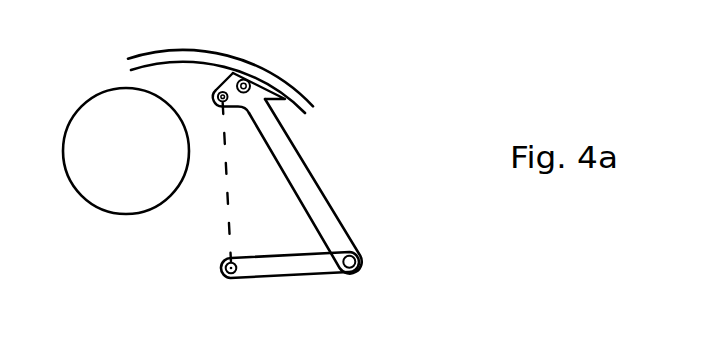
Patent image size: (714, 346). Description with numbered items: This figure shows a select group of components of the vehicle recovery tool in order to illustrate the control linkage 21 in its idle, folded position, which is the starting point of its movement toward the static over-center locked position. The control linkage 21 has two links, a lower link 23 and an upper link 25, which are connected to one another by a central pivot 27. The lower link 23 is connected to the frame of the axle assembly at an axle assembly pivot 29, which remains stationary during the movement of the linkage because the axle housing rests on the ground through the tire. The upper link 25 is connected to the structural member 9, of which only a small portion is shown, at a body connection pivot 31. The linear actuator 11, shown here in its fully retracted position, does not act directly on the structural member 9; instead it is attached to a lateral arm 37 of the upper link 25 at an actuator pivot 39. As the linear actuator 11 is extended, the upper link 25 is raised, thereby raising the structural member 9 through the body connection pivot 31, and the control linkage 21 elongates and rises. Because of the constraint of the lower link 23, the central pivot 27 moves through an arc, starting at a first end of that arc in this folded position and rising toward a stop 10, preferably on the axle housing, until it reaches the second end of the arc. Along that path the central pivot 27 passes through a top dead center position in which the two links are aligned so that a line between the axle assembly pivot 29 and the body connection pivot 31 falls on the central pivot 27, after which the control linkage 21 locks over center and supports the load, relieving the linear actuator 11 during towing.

The structural member 9 is at (283, 80).
The stop 10 is at (67, 175).
The linear actuator 11 is at (225, 175).
The control linkage 21 is at (340, 138).
The lower link 23 is at (282, 278).
The upper link 25 is at (313, 173).
The central pivot 27 is at (361, 263).
The axle assembly pivot 29 is at (223, 277).
The body connection pivot 31 is at (244, 79).
The lateral arm 37 is at (228, 108).
The actuator pivot 39 is at (213, 93).